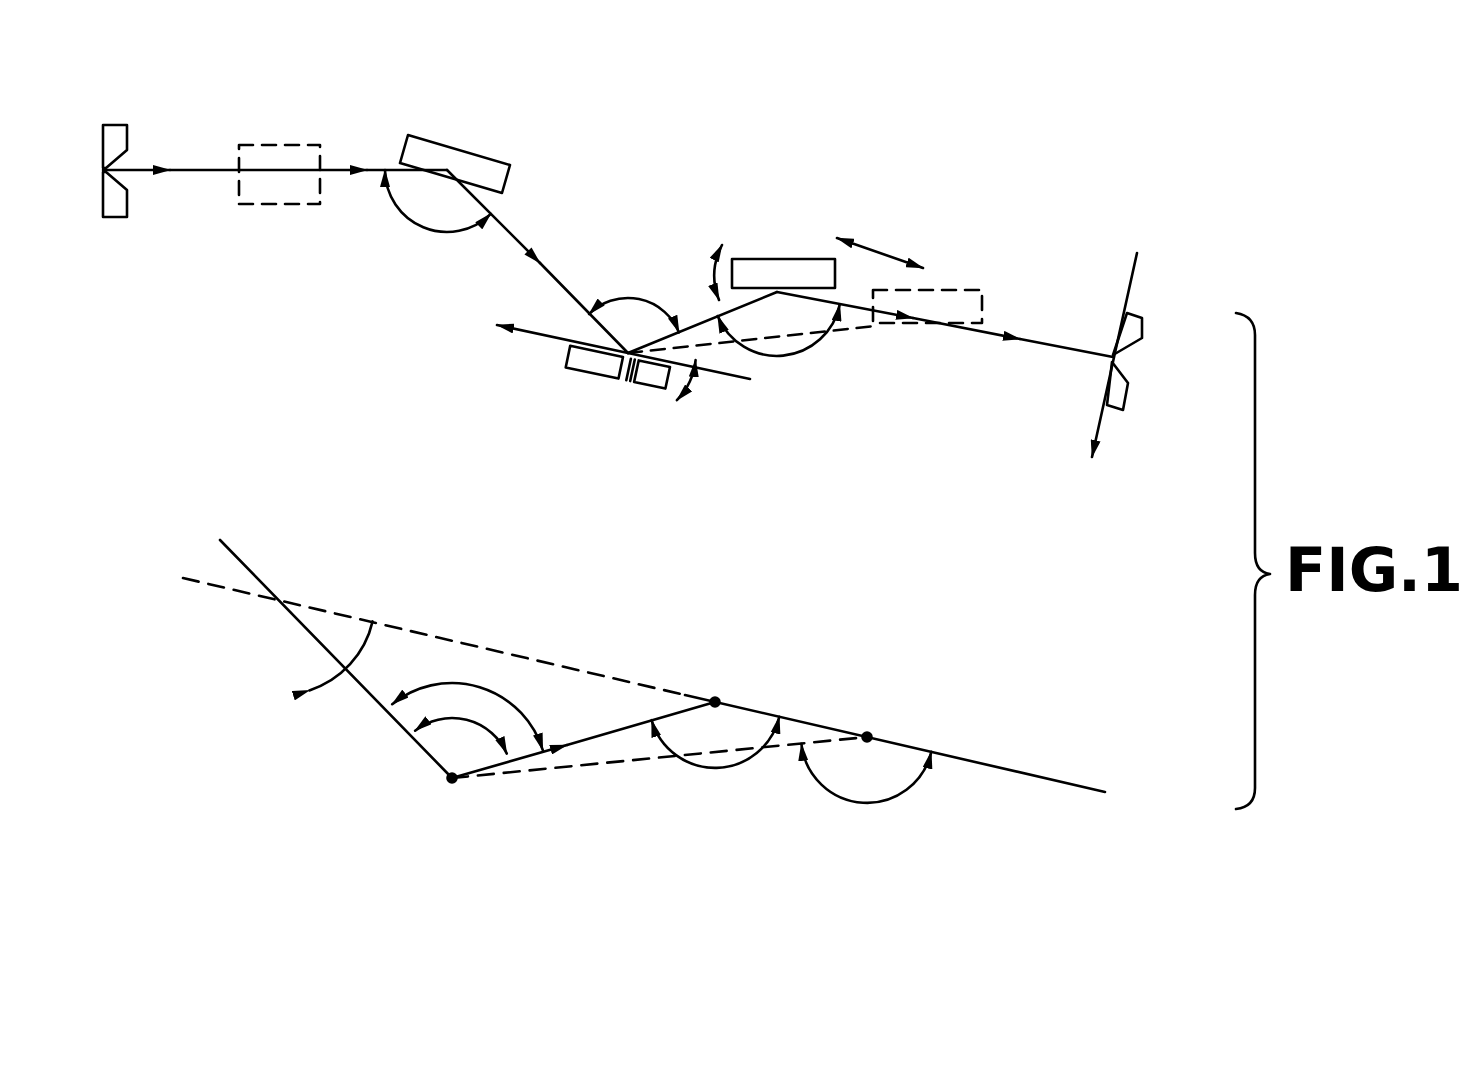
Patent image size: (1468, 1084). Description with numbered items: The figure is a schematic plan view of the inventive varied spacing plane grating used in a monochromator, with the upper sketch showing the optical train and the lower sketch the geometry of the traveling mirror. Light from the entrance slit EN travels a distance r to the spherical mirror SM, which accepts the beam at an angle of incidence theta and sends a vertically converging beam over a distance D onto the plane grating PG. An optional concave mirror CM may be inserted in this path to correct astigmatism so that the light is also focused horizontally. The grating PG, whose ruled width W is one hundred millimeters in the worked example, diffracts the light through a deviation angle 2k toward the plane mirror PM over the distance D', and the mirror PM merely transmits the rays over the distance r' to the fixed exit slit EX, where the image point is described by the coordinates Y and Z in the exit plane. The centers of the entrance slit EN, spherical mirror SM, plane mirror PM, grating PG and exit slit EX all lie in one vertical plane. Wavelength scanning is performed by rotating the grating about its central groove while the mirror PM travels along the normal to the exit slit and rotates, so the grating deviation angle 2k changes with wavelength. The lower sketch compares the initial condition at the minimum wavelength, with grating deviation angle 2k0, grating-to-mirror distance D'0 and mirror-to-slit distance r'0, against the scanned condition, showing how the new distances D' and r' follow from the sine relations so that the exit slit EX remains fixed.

The entrance slit EN is at (146, 133).
The distance EN-to-SM r is at (275, 142).
The optional concave mirror CM is at (299, 139).
The spherical mirror SM is at (480, 140).
The distance SM-to-PG D is at (537, 261).
The grating width W is at (602, 344).
The varied spacing plane grating PG is at (615, 395).
The deviation angle of the grating 2k is at (363, 767).
The distance PG to PM D' is at (663, 509).
The plane mirror PM is at (816, 436).
The distance PM to EX r' is at (899, 541).
The exit slit EX is at (1157, 355).
The Z coordinate Z is at (1087, 375).
The Y coordinate Y is at (1093, 484).
The initial deviation angle of the grating 2k0 is at (492, 674).
The initial distance PG to PM D'0 is at (659, 785).
The initial distance PM to EX r'0 is at (943, 732).